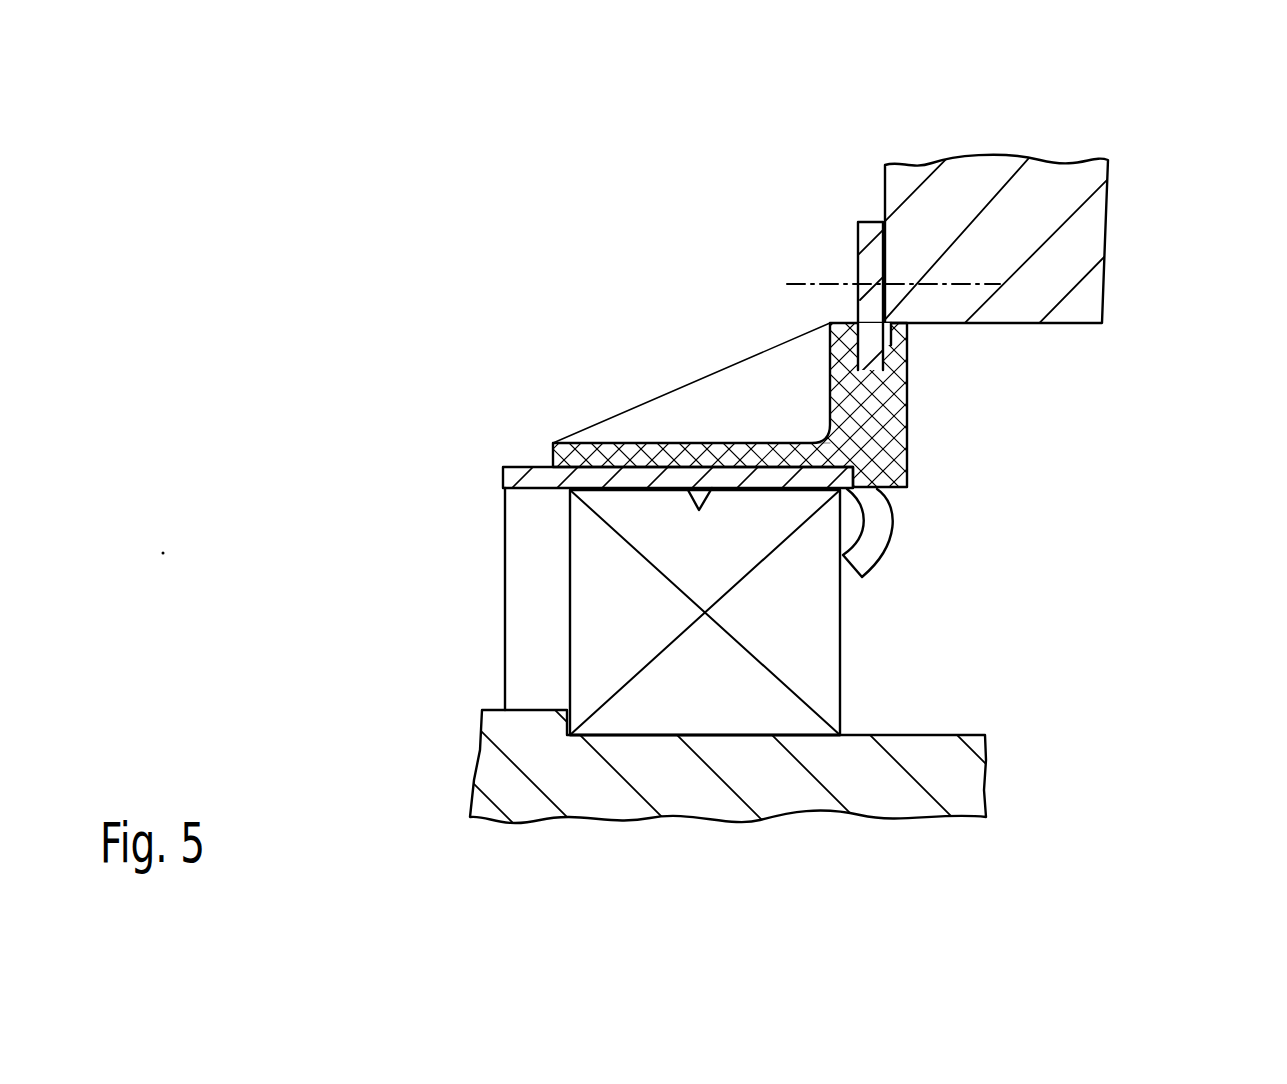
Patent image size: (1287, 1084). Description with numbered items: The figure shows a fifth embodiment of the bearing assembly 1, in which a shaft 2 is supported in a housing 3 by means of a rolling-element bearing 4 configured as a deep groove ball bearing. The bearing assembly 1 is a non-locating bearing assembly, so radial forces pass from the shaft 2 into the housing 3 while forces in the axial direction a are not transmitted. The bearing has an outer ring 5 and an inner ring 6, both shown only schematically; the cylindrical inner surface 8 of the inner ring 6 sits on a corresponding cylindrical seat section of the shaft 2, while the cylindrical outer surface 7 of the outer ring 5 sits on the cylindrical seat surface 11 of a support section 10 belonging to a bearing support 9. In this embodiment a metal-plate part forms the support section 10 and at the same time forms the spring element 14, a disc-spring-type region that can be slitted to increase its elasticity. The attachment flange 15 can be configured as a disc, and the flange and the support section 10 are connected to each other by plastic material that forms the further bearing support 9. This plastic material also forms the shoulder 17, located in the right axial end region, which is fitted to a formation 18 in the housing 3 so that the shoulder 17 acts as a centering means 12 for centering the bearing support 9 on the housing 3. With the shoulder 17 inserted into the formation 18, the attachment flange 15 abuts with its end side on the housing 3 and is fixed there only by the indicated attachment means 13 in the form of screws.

The bearing assembly 1 is at (447, 212).
The shaft 2 is at (957, 787).
The housing 3 is at (1067, 232).
The rolling-element bearing 4 is at (623, 620).
The outer ring 5 is at (663, 500).
The inner ring 6 is at (690, 722).
The cylindrical outer surface 7 is at (648, 487).
The cylindrical inner surface 8 is at (757, 737).
The bearing support 9 is at (907, 440).
The support section 10 is at (576, 476).
The cylindrical seat surface 11 is at (712, 490).
The centering means 12 is at (930, 328).
The attachment means 13 is at (803, 278).
The spring element 14 is at (880, 535).
The attachment flange 15 is at (857, 230).
The shoulder 17 is at (890, 318).
The formation 18 is at (978, 323).
The axial direction a is at (1198, 741).